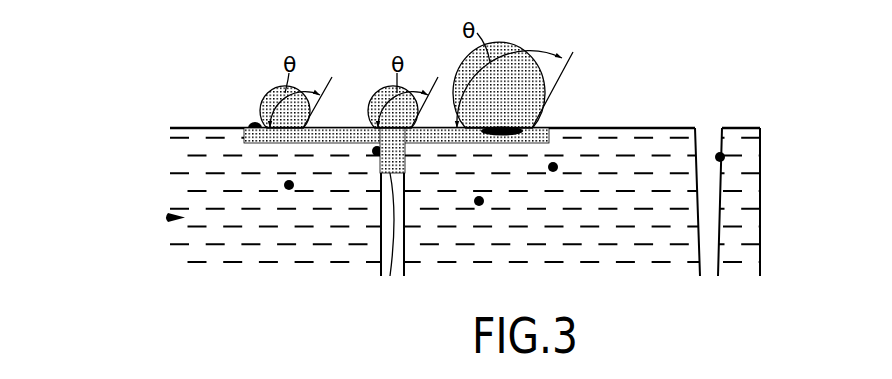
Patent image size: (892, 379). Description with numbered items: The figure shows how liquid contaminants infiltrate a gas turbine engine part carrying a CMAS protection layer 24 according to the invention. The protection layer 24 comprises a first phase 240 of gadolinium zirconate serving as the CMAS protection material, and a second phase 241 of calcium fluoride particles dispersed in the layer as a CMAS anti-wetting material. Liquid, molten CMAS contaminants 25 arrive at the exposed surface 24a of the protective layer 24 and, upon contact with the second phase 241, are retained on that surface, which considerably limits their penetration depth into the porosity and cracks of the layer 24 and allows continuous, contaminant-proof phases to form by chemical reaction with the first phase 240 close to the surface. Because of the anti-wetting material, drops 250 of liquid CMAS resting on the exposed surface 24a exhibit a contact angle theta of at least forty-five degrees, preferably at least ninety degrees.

The CMAS protection layer 24 is at (160, 187).
The exposed surface 24a is at (653, 128).
The first phase 240 is at (185, 243).
The second phase 241 is at (250, 125).
The liquid CMAS 25 is at (390, 276).
The drops of liquid CMAS 250 is at (273, 89).